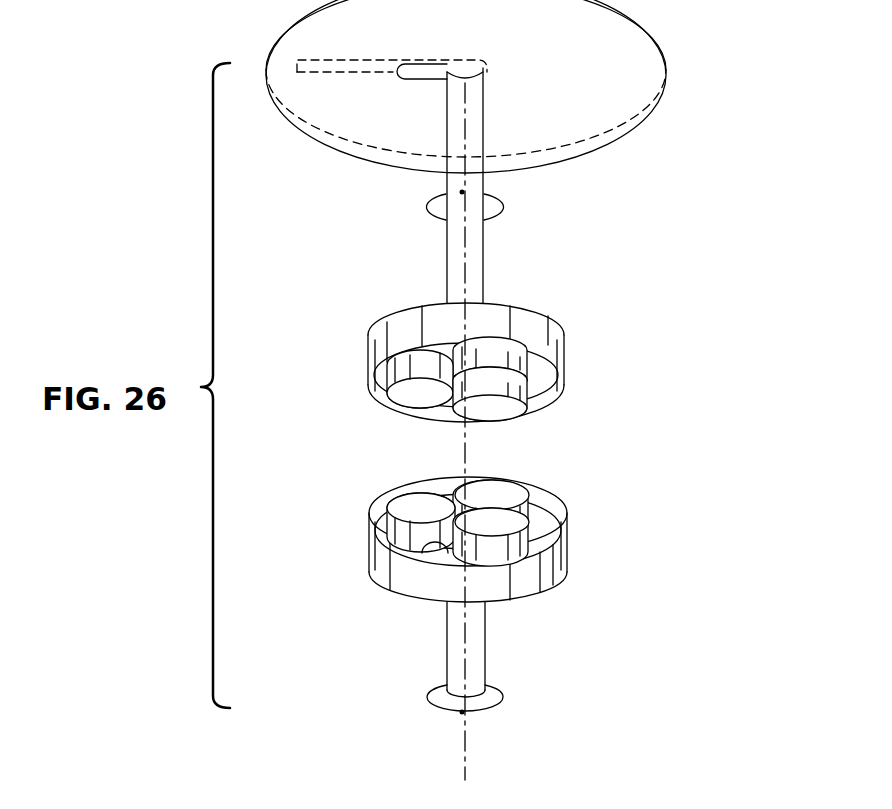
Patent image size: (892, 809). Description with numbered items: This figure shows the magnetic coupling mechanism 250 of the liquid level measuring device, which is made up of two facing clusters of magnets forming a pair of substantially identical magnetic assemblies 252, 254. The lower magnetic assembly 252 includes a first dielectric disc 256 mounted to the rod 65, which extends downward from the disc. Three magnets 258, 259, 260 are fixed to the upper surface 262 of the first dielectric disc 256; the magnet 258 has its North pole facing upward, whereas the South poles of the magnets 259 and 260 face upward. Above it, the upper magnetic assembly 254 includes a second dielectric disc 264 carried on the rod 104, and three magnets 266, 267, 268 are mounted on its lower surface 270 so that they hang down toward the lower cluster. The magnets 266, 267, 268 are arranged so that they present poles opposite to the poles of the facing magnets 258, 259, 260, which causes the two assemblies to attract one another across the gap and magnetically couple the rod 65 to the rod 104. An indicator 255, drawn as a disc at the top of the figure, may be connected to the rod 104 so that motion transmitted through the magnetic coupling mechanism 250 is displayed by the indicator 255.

The indicator 255 is at (667, 68).
The rod 104 is at (484, 240).
The second dielectric disc 264 is at (563, 347).
The magnet 267 is at (386, 390).
The magnet 268 is at (527, 378).
The magnet 266 is at (530, 405).
The lower surface 270 is at (440, 422).
The magnetic assembly 254 is at (677, 433).
The magnetic coupling mechanism 250 is at (688, 507).
The magnetic assembly 252 is at (623, 665).
The first dielectric disc 256 is at (567, 548).
The magnet 259 is at (386, 513).
The magnet 260 is at (528, 503).
The magnet 258 is at (497, 548).
The upper surface 262 is at (422, 553).
The rod 65 is at (485, 640).